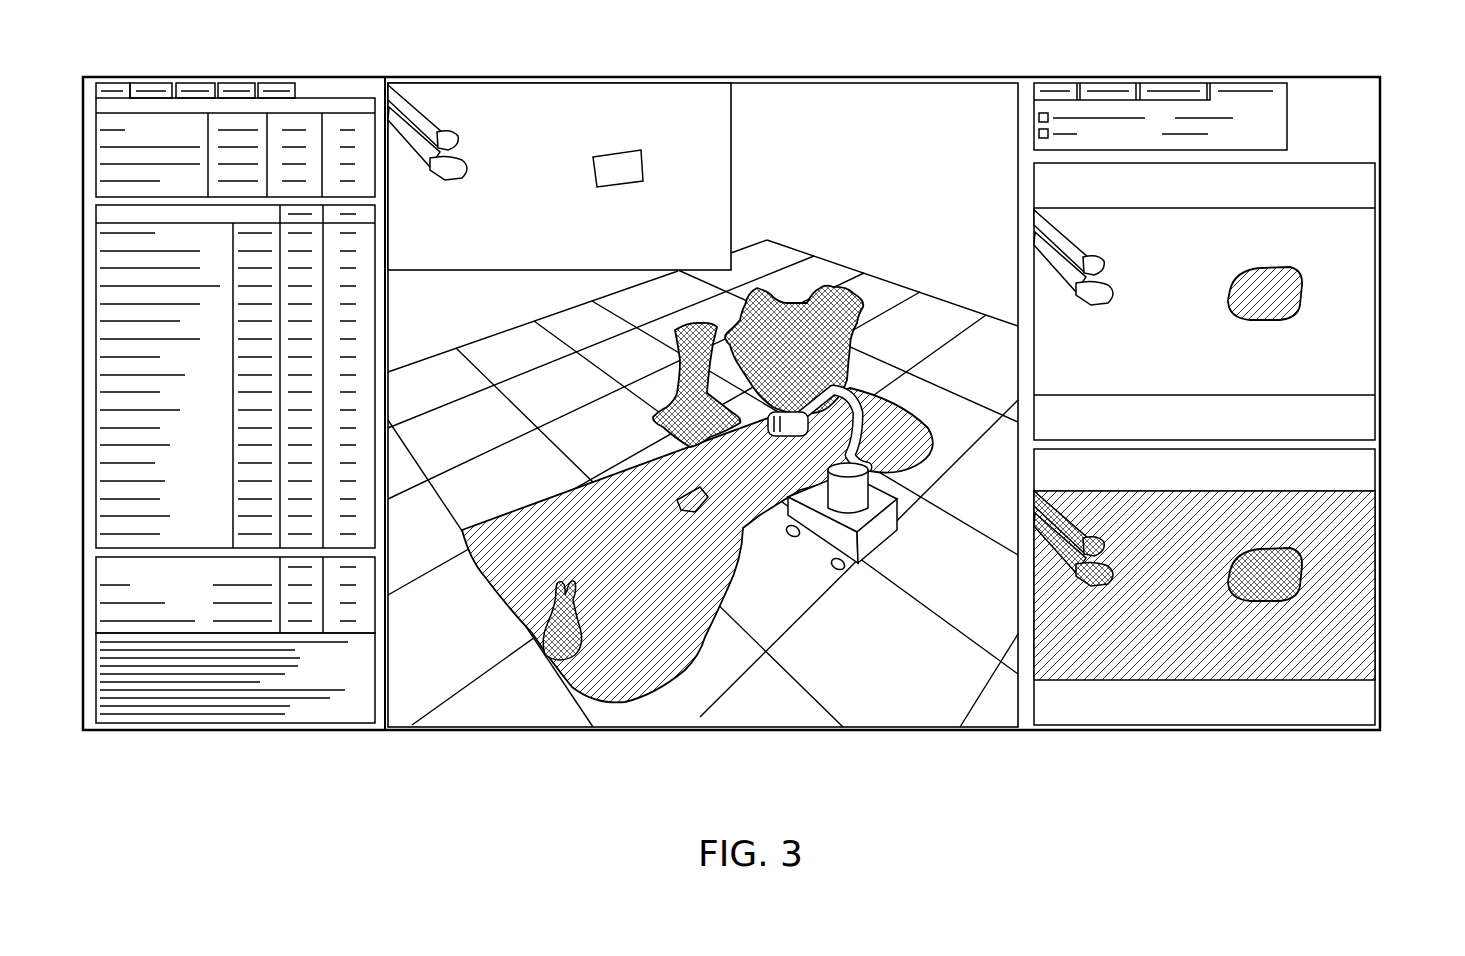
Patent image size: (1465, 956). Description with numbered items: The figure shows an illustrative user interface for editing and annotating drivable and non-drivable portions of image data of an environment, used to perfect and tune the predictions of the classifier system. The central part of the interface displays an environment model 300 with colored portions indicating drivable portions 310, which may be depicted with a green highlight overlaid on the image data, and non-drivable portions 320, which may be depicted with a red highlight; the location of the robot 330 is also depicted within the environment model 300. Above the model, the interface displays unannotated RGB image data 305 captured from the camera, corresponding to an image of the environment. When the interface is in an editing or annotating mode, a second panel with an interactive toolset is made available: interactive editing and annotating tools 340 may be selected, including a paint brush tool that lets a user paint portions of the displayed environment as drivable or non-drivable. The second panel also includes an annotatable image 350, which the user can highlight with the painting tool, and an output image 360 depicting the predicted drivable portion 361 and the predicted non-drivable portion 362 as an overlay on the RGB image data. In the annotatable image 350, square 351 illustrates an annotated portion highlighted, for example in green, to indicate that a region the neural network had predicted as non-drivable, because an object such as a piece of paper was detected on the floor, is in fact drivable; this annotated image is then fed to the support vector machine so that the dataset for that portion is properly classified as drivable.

The environment model 300 is at (766, 391).
The unannotated RGB image data 305 is at (559, 138).
The drivable portions 310 is at (697, 581).
The non-drivable portions 320 is at (742, 532).
The robot 330 is at (832, 532).
The interactive editing and annotating tools 340 is at (1178, 92).
The annotatable image 350 is at (1241, 301).
The square 351 is at (1214, 324).
The output image 360 is at (1241, 587).
The predicted drivable portion 361 is at (1239, 530).
The predicted non-drivable portion 362 is at (1204, 607).